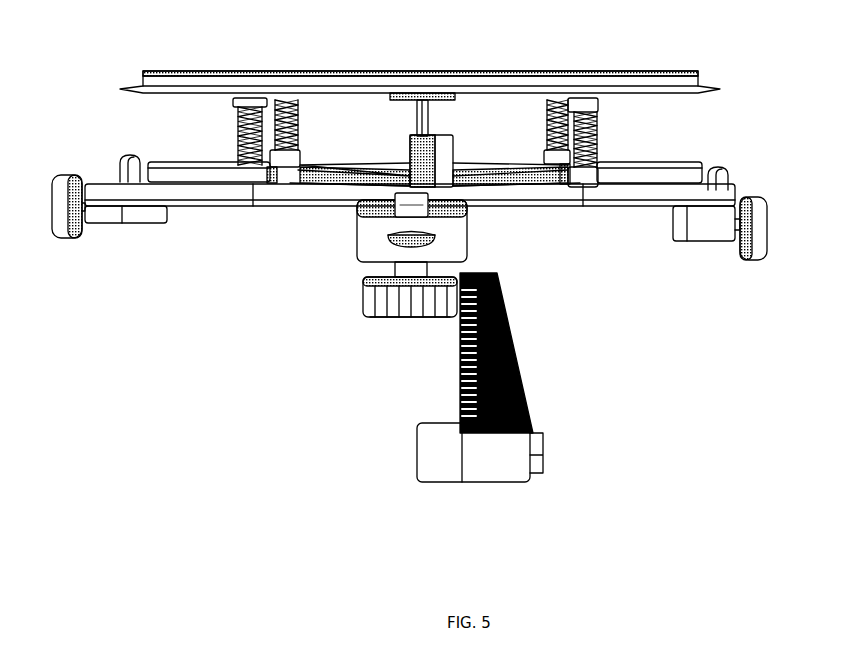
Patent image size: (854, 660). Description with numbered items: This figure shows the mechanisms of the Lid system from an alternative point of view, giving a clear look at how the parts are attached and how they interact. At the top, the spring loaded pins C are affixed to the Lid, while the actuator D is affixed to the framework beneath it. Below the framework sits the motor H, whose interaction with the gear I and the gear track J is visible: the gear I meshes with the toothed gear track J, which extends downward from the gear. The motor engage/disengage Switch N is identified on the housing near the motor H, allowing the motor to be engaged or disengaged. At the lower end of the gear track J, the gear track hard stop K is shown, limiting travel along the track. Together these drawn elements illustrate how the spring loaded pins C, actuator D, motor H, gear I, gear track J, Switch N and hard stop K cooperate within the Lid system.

The spring loaded pins C is at (585, 132).
The actuator D is at (447, 157).
The motor engage/disengage Switch N is at (355, 215).
The motor H is at (470, 240).
The gear I is at (362, 313).
The gear track J is at (533, 423).
The gear track hard stop K is at (417, 461).